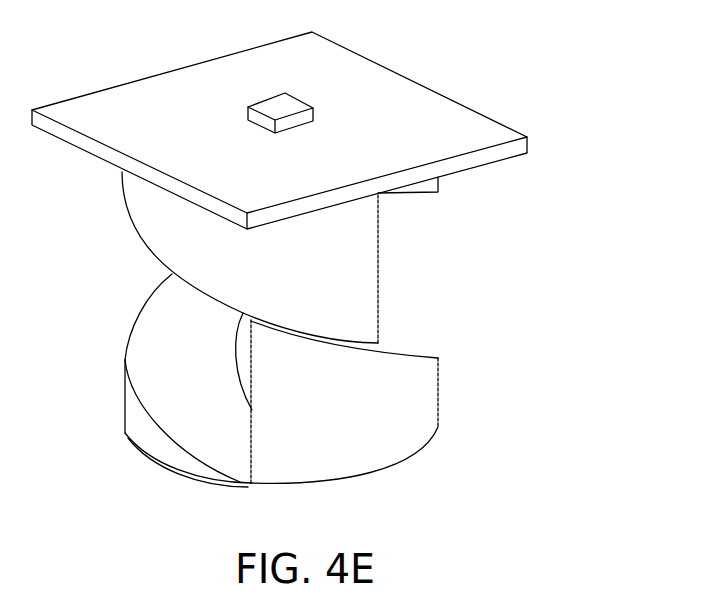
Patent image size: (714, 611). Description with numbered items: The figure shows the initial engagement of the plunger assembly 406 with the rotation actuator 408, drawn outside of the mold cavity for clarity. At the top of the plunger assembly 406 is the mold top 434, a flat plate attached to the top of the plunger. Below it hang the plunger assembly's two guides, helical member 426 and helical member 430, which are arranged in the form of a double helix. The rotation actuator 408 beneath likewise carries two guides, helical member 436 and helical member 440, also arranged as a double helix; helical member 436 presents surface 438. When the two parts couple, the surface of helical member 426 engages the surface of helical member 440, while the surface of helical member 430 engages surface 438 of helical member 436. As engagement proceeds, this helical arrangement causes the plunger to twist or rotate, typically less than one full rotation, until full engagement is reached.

The plunger assembly 406 is at (523, 198).
The rotation actuator 408 is at (85, 387).
The helical member 426 is at (340, 286).
The helical member 430 is at (417, 193).
The mold top 434 is at (202, 138).
The helical member 436 is at (142, 433).
The surface 438 is at (152, 342).
The helical member 440 is at (340, 432).